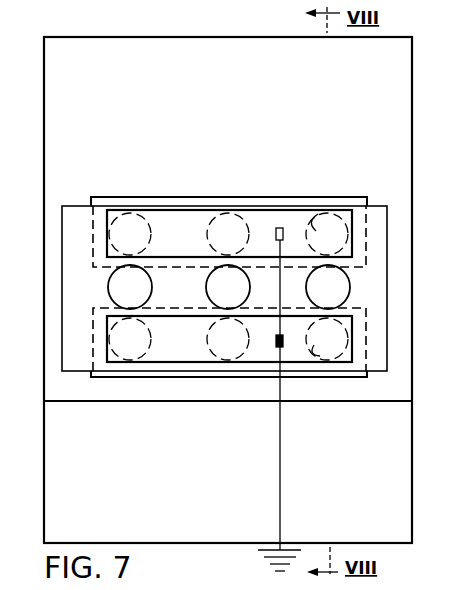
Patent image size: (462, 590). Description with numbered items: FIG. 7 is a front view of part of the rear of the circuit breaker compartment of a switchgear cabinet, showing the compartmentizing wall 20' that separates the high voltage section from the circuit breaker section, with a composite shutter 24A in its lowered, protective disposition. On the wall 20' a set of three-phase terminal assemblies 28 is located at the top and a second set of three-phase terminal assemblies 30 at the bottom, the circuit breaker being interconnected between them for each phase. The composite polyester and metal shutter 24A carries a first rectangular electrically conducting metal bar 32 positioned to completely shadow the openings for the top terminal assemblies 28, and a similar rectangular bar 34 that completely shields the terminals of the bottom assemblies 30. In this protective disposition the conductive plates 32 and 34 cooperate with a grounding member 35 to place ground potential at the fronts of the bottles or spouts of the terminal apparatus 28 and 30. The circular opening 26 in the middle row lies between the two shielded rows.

The compartmentizing wall 20' is at (253, 290).
The composite polyester and metal shutter 24A is at (70, 206).
The cooking zone / heating element opening 26 is at (337, 282).
The top three-phase terminal assembly 28 is at (320, 217).
The bottom three-phase terminal assembly 30 is at (330, 363).
The first rectangular electrically conducting metal bar 32 is at (340, 212).
The rectangular bar 34 is at (297, 363).
The grounding member 35 is at (281, 478).